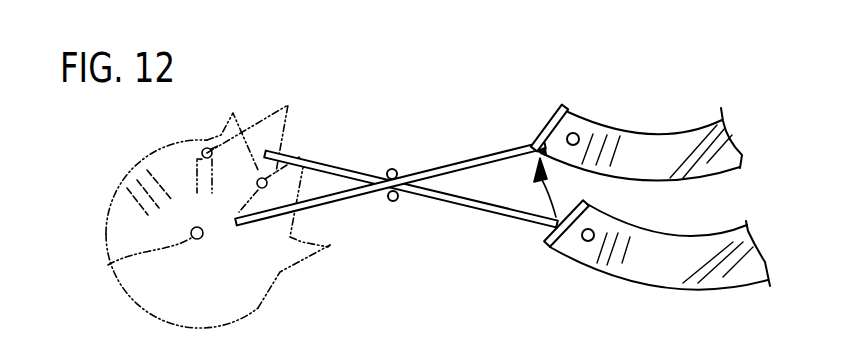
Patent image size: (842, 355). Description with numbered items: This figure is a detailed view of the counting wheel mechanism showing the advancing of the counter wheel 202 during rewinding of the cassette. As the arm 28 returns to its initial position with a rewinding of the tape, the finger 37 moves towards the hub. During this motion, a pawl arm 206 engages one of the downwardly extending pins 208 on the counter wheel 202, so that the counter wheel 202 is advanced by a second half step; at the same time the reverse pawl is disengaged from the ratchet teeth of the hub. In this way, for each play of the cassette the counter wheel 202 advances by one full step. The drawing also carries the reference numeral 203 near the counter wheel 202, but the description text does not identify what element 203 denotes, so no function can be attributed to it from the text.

The counter wheel 202 is at (258, 307).
The spring 203 is at (108, 265).
The downwardly extending pins 208 is at (288, 105).
The pawl arm 206 is at (450, 208).
The finger 37 is at (605, 260).
The arm 28 is at (672, 270).